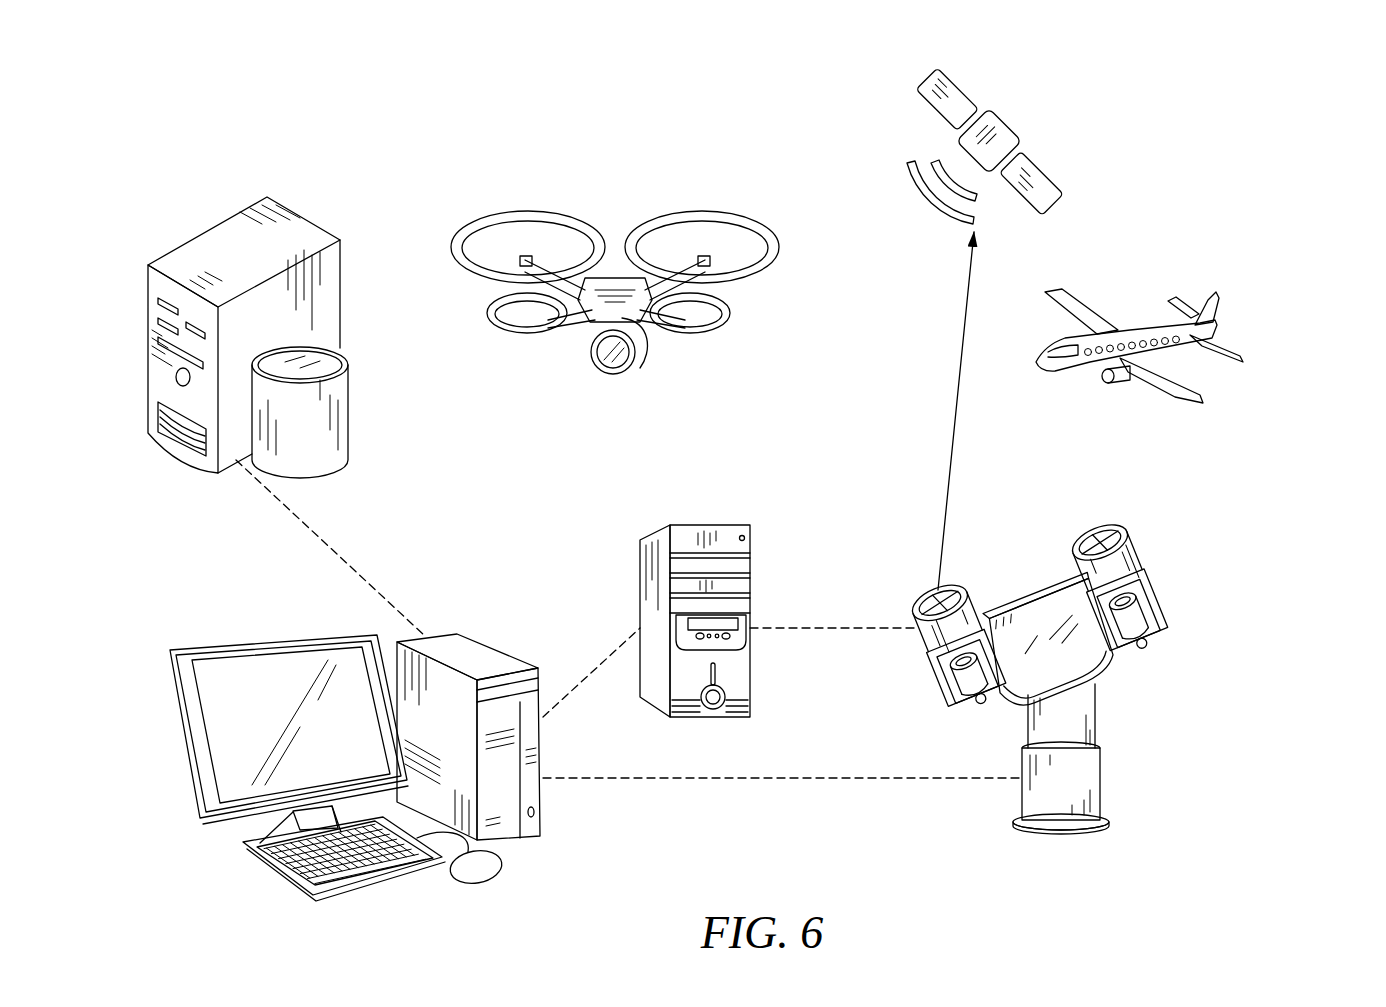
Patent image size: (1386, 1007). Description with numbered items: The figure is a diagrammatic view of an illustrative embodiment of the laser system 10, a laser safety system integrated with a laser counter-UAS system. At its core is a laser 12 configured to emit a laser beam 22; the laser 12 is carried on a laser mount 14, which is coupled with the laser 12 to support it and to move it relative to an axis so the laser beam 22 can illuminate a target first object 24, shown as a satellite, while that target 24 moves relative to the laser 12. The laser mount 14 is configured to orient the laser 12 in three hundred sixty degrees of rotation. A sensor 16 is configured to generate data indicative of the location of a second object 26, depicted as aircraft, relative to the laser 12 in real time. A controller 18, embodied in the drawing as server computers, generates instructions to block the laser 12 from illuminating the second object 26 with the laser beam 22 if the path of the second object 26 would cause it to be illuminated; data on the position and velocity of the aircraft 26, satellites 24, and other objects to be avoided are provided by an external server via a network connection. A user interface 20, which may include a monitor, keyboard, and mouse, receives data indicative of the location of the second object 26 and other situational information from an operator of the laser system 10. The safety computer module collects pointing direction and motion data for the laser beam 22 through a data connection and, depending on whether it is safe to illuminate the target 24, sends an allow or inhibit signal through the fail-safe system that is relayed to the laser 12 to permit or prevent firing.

The laser system 10 is at (1130, 570).
The laser 12 is at (1090, 584).
The laser mount 14 is at (1113, 745).
The sensor 16 is at (1127, 523).
The controller 18 is at (610, 590).
The user interface 20 is at (178, 758).
The laser beam 22 is at (955, 422).
The target first object 24 is at (1015, 120).
The second object 26 is at (612, 232).